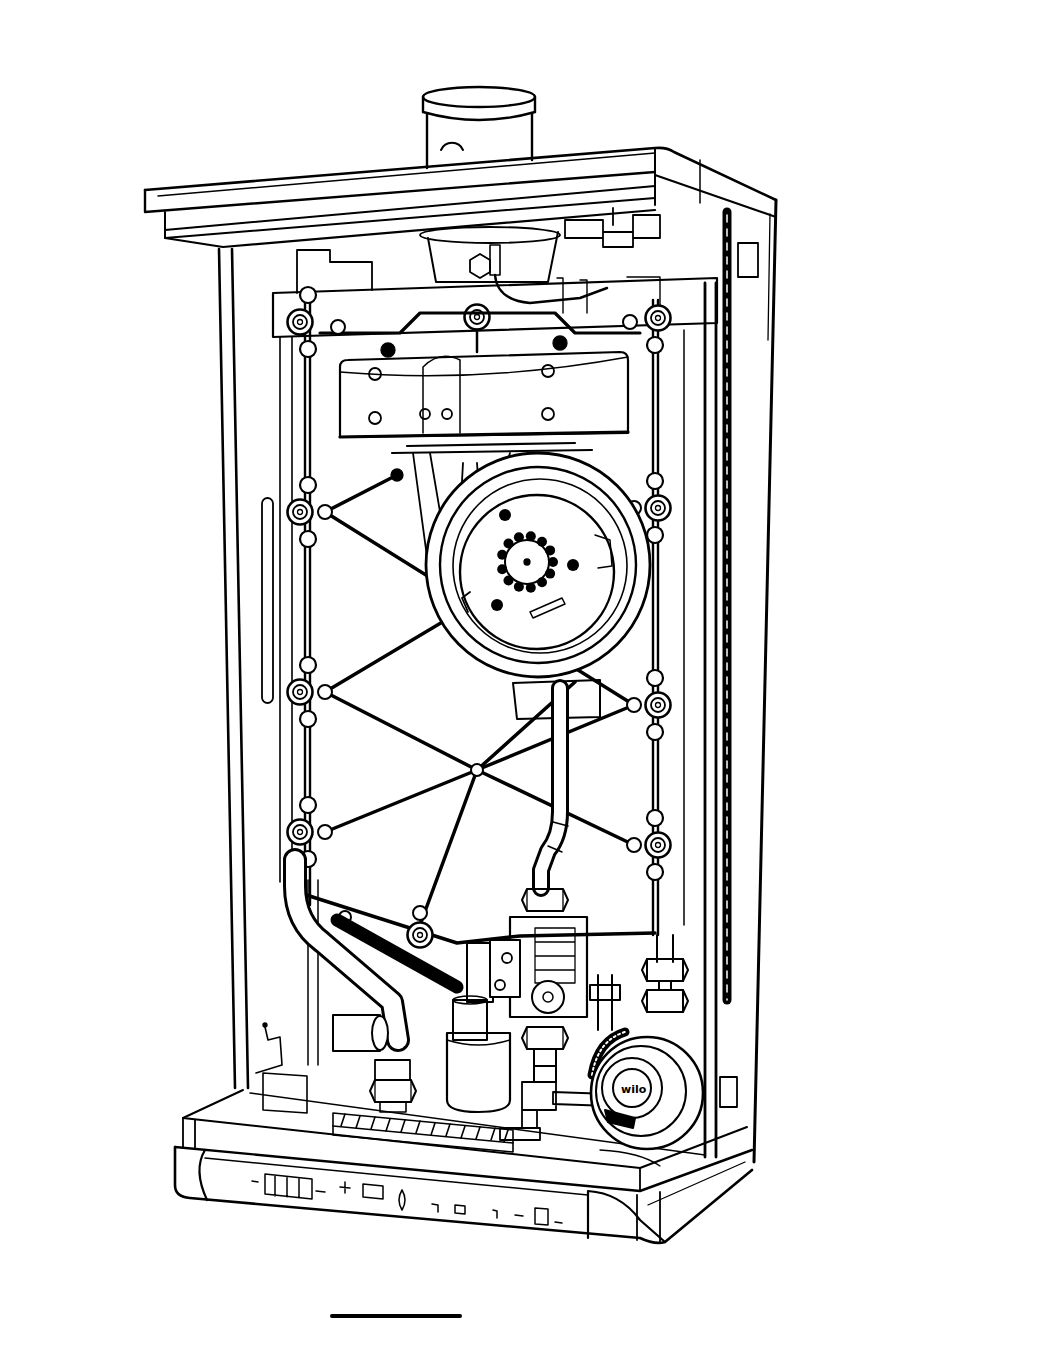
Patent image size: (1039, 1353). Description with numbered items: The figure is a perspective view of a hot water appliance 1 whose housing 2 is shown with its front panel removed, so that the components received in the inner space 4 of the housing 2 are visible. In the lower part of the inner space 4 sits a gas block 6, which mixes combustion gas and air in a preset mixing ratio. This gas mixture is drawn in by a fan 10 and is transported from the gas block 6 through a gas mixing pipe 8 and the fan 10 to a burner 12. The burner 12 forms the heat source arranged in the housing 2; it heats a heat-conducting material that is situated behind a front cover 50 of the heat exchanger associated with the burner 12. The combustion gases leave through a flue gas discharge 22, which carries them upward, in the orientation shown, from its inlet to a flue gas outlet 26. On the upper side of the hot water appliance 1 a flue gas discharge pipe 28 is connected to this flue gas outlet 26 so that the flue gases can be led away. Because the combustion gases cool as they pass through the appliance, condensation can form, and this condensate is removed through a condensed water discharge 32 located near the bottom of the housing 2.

The hot water appliance 1 is at (793, 133).
The housing 2 is at (733, 653).
The inner space 4 is at (212, 727).
The gas block 6 is at (500, 957).
The gas mixing pipe 8 is at (560, 797).
The fan 10 is at (606, 494).
The burner 12 is at (338, 374).
The flue gas discharge 22 is at (573, 270).
The flue gas outlet 26 is at (474, 240).
The flue gas discharge pipe 28 is at (443, 123).
The condensed water discharge 32 is at (474, 1096).
The front cover 50 is at (350, 602).